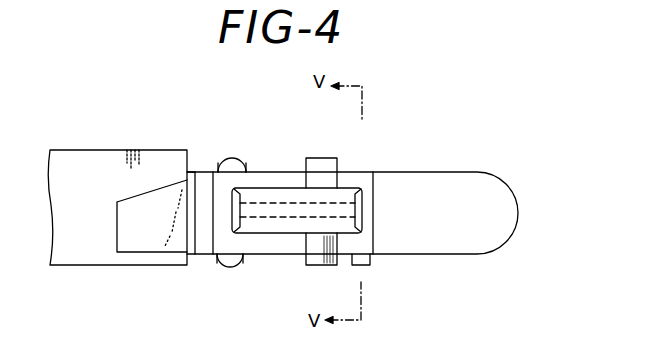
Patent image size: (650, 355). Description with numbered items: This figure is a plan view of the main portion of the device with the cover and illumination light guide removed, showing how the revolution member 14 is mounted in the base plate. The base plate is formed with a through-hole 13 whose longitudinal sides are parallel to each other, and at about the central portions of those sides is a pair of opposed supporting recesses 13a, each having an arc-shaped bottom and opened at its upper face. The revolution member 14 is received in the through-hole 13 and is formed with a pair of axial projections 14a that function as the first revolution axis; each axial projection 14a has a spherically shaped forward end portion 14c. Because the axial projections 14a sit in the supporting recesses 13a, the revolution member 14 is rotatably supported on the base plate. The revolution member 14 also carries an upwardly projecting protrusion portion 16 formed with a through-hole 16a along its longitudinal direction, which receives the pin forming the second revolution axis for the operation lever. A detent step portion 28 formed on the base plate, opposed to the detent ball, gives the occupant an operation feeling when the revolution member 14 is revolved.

The through-hole 13 is at (455, 172).
The supporting recess 13a is at (242, 162).
The revolution member 14 is at (298, 171).
The axial projection 14a is at (219, 166).
The forward end portion 14c is at (238, 157).
The protrusion portion 16 is at (351, 187).
The through-hole 16a is at (337, 218).
The detent step portion 28 is at (360, 254).